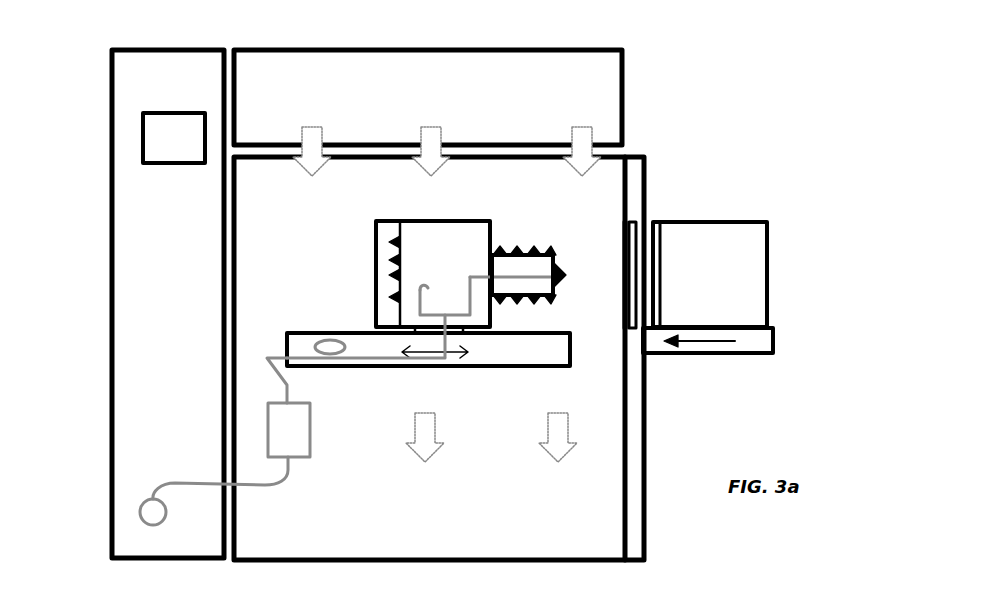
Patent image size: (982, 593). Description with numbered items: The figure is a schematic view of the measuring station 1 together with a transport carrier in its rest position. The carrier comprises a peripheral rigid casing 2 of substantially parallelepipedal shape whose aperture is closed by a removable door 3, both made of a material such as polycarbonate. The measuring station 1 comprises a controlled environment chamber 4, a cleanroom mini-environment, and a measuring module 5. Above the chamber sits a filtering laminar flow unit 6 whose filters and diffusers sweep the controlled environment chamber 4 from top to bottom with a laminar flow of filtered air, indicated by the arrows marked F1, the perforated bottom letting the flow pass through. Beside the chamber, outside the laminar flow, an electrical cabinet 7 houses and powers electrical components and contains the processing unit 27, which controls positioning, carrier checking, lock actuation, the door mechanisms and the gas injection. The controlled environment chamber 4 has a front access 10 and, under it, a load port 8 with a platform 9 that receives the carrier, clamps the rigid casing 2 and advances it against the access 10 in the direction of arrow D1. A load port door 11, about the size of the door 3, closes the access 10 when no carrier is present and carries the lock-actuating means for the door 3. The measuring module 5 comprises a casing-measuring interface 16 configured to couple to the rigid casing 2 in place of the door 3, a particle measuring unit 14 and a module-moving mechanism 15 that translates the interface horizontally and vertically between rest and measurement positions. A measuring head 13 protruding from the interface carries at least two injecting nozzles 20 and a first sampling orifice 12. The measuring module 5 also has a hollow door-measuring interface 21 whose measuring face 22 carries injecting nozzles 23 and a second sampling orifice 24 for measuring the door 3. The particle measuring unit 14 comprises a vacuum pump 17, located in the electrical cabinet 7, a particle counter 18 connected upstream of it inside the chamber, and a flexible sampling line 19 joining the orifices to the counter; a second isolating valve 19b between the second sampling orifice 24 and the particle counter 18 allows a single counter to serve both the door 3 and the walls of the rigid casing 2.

The measuring station 1 is at (89, 116).
The rigid casing 2 is at (753, 252).
The door 3 is at (658, 240).
The controlled environment chamber 4 is at (417, 551).
The measuring module 5 is at (331, 221).
The filtering laminar flow unit 6 is at (574, 72).
The electrical cabinet 7 is at (163, 73).
The load port 8 is at (652, 563).
The platform 9 is at (727, 348).
The front access 10 is at (625, 323).
The load port door 11 is at (628, 267).
The first sampling orifice 12 is at (590, 280).
The measuring head 13 is at (522, 272).
The particle measuring unit 14 is at (153, 443).
The module-moving mechanism 15 is at (533, 362).
The casing-measuring interface 16 is at (480, 238).
The vacuum pump 17 is at (158, 505).
The particle counter 18 is at (268, 436).
The sampling line 19 is at (335, 352).
The second isolating valve 19b is at (420, 305).
The injecting nozzles 20 is at (540, 256).
The hollow door-measuring interface 21 is at (386, 296).
The measuring face 22 is at (407, 250).
The injecting nozzles 23 is at (398, 262).
The second sampling orifice 24 is at (397, 280).
The processing unit 27 is at (190, 164).